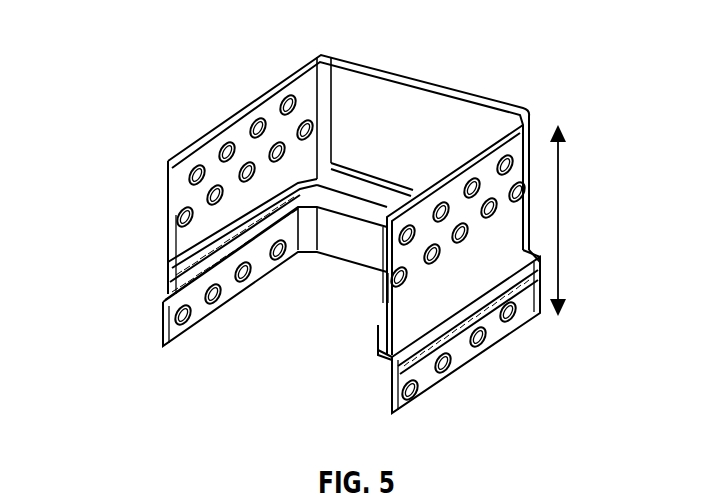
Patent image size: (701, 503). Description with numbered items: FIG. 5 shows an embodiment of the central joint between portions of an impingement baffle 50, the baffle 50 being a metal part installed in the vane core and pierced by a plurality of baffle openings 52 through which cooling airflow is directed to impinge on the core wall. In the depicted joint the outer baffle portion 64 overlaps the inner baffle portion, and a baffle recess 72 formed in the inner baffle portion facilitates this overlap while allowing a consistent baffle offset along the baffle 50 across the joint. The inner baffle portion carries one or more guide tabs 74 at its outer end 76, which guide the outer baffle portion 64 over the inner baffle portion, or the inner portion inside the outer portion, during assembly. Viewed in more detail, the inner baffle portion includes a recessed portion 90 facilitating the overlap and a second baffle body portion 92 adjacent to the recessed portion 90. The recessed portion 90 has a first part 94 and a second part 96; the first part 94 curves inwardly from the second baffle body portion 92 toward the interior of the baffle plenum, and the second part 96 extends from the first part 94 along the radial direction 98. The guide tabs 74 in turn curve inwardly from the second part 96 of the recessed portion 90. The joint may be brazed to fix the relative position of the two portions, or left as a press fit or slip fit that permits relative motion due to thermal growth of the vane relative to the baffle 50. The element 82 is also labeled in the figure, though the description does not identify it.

The baffle 50 is at (128, 52).
The baffle openings 52 is at (252, 118).
The outer baffle portion 64 is at (168, 208).
The baffle recess 72 is at (172, 291).
The guide tabs 74 is at (232, 214).
The outer end 76 is at (358, 167).
The lower perforated flange 82 is at (161, 327).
The recessed portion 90 is at (377, 348).
The second baffle body portion 92 is at (463, 355).
The first part 94 is at (403, 358).
The second part 96 is at (380, 312).
The radial direction 98 is at (559, 217).